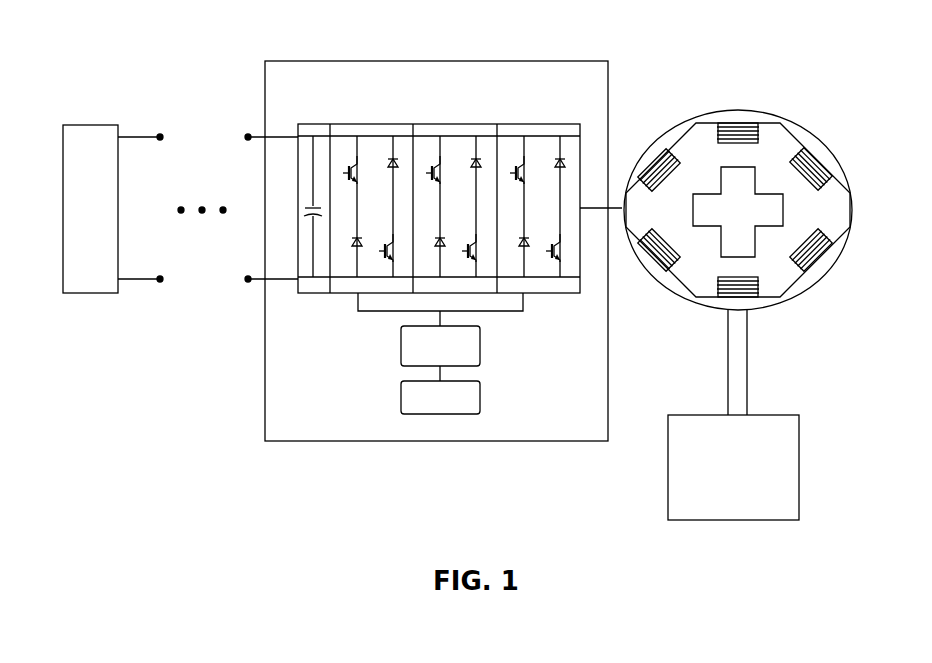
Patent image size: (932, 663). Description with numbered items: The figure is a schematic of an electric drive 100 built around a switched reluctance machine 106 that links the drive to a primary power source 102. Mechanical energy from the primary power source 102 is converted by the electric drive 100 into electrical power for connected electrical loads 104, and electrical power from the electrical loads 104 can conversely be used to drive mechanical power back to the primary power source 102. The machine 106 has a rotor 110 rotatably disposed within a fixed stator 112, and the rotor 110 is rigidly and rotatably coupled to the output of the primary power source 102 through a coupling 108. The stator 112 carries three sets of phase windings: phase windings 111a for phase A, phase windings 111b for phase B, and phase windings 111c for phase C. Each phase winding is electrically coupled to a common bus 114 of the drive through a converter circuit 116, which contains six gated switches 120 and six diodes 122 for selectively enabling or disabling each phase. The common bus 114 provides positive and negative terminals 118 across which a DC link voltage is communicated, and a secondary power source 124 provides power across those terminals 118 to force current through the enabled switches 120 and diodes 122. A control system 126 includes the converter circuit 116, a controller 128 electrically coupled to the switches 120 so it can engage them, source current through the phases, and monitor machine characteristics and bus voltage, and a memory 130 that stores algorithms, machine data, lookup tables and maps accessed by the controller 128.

The electric drive 100 is at (610, 27).
The primary power source 102 is at (769, 414).
The electrical loads 104 is at (90, 125).
The switched reluctance machine 106 is at (707, 111).
The coupling 108 is at (727, 380).
The rotor 110 is at (752, 180).
The phase windings 111a is at (745, 130).
The phase windings 111b is at (818, 168).
The phase windings 111c is at (660, 158).
The stator 112 is at (687, 125).
The common bus 114 is at (152, 292).
The converter circuit 116 is at (359, 124).
The terminals 118 is at (248, 133).
The gated switches 120 is at (352, 163).
The diodes 122 is at (392, 159).
The secondary power source 124 is at (312, 205).
The control system 126 is at (335, 442).
The controller 128 is at (481, 347).
The memory 130 is at (481, 397).